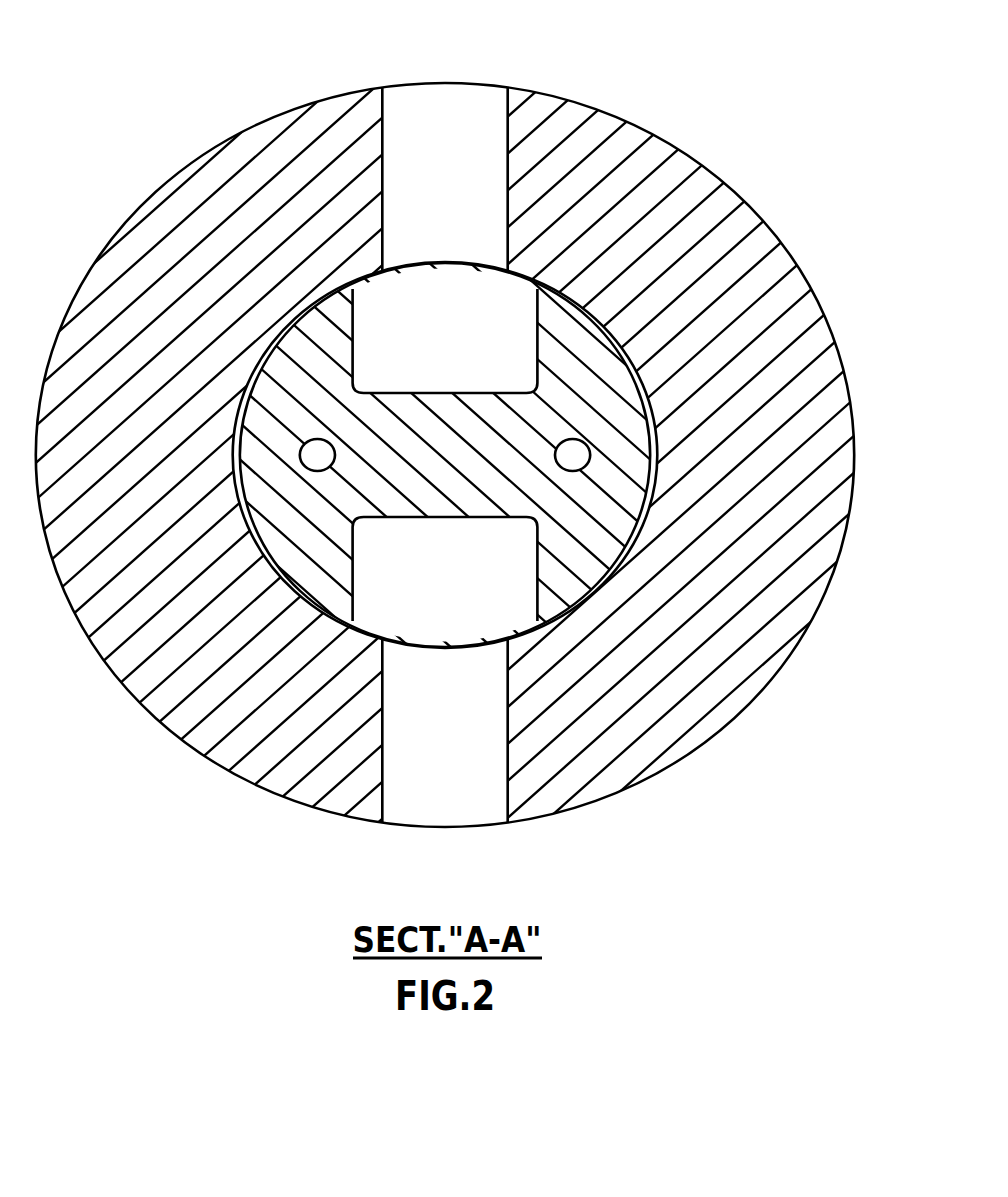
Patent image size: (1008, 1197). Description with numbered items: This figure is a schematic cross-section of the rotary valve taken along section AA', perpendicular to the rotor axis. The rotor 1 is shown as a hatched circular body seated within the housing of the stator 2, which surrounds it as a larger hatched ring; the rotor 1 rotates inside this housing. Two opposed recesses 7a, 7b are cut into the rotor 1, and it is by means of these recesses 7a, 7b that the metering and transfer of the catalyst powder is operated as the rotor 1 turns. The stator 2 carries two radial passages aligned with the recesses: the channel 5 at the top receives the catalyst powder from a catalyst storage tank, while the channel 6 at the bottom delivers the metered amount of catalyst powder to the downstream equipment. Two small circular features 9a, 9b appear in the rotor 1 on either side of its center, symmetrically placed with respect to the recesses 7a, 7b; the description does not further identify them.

The rotor 1 is at (585, 380).
The stator 2 is at (158, 638).
The channel 5 is at (436, 117).
The channel 6 is at (432, 776).
The recess 7a is at (493, 318).
The recess 7b is at (493, 588).
The right bore 9a is at (572, 453).
The left bore 9b is at (315, 458).